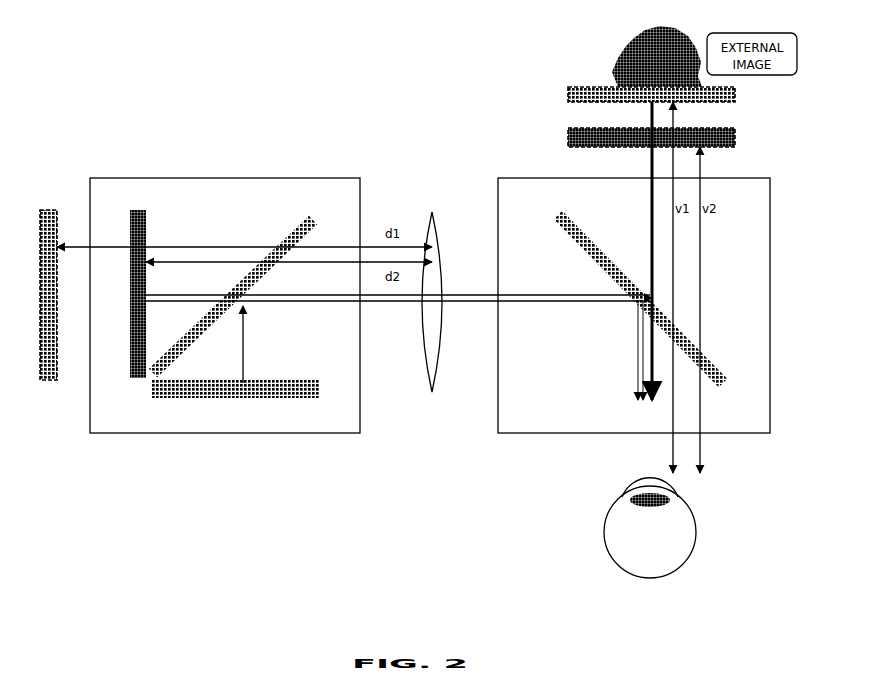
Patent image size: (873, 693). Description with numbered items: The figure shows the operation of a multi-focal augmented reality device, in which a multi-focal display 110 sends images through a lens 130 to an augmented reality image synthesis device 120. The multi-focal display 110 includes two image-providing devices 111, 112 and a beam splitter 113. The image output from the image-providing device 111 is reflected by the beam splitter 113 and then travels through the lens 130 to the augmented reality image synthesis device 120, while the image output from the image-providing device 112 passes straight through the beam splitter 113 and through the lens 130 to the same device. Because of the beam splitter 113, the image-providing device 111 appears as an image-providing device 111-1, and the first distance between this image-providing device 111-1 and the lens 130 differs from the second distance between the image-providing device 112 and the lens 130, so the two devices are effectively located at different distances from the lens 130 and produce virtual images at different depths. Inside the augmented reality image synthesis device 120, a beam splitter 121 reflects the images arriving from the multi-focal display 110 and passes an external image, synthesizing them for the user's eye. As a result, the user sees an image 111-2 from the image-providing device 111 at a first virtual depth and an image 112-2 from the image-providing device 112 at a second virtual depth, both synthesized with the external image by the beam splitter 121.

The multi-focal display 110 is at (186, 178).
The image-providing device 111 is at (240, 398).
The image-providing device 111-1 is at (46, 380).
The image 111-2 is at (738, 94).
The image-providing device 112 is at (130, 333).
The image 112-2 is at (738, 137).
The beam splitter 113 is at (270, 248).
The augmented reality image synthesis device 120 is at (527, 178).
The beam splitter 121 is at (688, 330).
The lens 130 is at (432, 392).